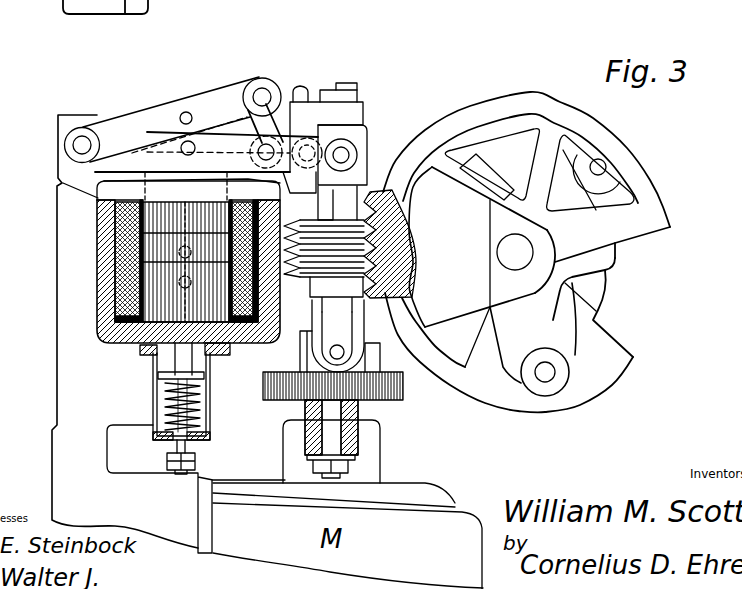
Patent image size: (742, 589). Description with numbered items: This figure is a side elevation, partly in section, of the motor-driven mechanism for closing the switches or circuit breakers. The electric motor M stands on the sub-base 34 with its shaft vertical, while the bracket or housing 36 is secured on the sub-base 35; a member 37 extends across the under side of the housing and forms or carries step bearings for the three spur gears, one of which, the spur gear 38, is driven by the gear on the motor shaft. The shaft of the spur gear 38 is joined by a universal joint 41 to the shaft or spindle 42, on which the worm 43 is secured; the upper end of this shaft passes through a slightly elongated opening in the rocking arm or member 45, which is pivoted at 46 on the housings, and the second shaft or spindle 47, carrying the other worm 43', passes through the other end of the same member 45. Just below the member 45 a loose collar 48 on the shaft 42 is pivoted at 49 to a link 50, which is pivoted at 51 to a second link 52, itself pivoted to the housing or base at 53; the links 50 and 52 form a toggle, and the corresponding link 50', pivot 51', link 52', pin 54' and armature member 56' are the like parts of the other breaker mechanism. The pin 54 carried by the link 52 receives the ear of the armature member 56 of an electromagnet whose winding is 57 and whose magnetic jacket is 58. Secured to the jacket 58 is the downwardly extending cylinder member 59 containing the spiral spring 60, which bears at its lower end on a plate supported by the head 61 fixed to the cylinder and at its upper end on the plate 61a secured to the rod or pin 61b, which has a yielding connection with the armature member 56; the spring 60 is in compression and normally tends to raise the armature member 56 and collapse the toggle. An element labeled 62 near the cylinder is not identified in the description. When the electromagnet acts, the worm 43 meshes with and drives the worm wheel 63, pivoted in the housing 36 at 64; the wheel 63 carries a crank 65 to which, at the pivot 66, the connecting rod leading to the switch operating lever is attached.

The sub-base 34 is at (295, 506).
The sub-base 35 is at (125, 331).
The bracket or housing 36 is at (370, 148).
The member 37 is at (360, 408).
The spur gear 38 is at (403, 395).
The universal joint 41 is at (327, 343).
The shaft or spindle 42 is at (337, 103).
The worm 43 is at (321, 276).
The worm 43' is at (348, 242).
The rocking arm or member 45 is at (367, 116).
The pivot 46 is at (358, 102).
The shaft or spindle 47 is at (302, 87).
The loose collar 48 is at (368, 145).
The pivot 49 is at (349, 155).
The link 50 is at (206, 106).
The link 50' is at (308, 96).
The pivot 51 is at (253, 112).
The pivot 51' is at (262, 78).
The link 52 is at (171, 109).
The link 52' is at (211, 94).
The pivot 53 is at (82, 136).
The pin 54 is at (170, 142).
The pin 54' is at (207, 111).
The armature member 56 is at (146, 196).
The armature member 56' is at (146, 178).
The winding 57 is at (123, 248).
The magnetic jacket 58 is at (93, 310).
The cylinder member 59 is at (212, 425).
The spiral spring 60 is at (162, 383).
The head 61 is at (163, 438).
The plate 61a is at (157, 372).
The rod or pin 61b is at (155, 355).
The adjusting nut 62 is at (188, 448).
The worm wheel 63 is at (645, 178).
The pivot 64 is at (525, 245).
The crank 65 is at (555, 325).
The pivot 66 is at (545, 378).